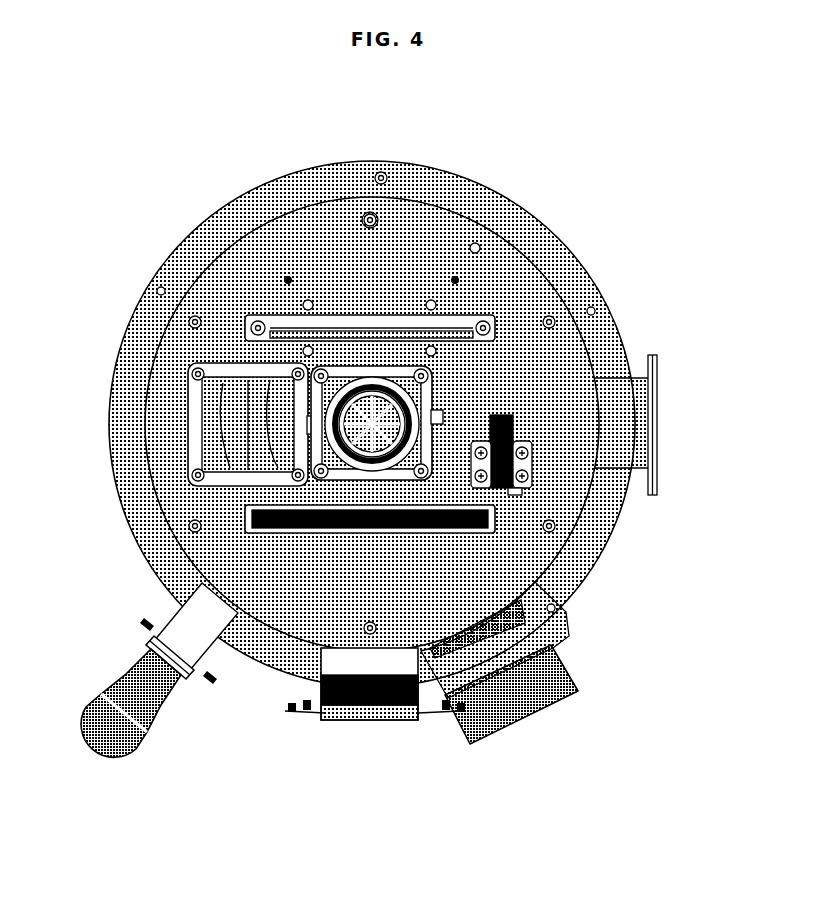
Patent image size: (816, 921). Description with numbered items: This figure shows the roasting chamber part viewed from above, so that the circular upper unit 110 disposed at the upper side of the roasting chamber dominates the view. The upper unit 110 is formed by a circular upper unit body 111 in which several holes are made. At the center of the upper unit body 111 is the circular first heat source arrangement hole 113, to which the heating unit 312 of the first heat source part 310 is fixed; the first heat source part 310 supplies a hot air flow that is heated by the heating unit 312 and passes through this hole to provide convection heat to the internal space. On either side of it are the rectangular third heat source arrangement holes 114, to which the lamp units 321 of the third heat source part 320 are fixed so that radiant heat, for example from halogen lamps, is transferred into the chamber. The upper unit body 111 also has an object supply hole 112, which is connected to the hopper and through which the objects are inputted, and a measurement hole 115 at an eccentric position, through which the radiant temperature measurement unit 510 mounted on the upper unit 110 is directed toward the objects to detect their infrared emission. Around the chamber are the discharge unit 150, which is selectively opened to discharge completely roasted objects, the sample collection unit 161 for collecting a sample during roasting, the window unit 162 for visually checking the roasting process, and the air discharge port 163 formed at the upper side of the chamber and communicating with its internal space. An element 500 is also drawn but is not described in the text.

The upper unit 110 is at (539, 208).
The upper unit body 111 is at (467, 193).
The object supply hole 112 is at (220, 440).
The first heat source arrangement hole 113 is at (368, 357).
The third heat source arrangement hole 114 is at (408, 306).
The measurement hole 115 is at (493, 483).
The discharge unit 150 is at (500, 735).
The sample collection unit 161 is at (175, 677).
The window unit 162 is at (337, 717).
The air discharge port 163 is at (650, 420).
The first heat source part 310 is at (425, 305).
The heating unit 312 is at (300, 480).
The third heat source part 320 is at (345, 298).
The lamp unit 321 is at (441, 392).
The mounting bracket 500 is at (530, 426).
The radiant temperature measurement unit 510 is at (510, 488).